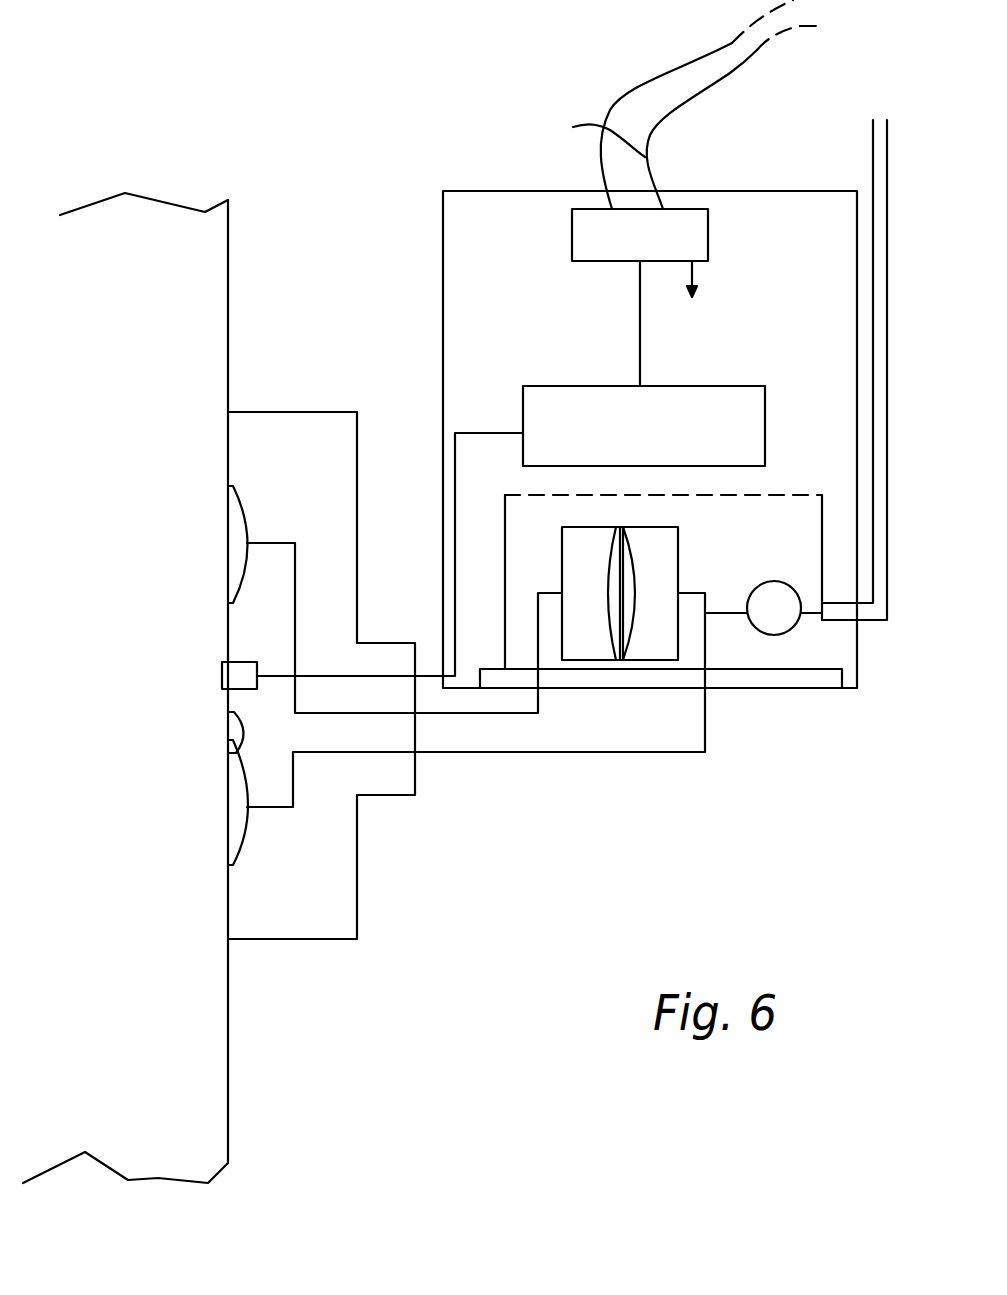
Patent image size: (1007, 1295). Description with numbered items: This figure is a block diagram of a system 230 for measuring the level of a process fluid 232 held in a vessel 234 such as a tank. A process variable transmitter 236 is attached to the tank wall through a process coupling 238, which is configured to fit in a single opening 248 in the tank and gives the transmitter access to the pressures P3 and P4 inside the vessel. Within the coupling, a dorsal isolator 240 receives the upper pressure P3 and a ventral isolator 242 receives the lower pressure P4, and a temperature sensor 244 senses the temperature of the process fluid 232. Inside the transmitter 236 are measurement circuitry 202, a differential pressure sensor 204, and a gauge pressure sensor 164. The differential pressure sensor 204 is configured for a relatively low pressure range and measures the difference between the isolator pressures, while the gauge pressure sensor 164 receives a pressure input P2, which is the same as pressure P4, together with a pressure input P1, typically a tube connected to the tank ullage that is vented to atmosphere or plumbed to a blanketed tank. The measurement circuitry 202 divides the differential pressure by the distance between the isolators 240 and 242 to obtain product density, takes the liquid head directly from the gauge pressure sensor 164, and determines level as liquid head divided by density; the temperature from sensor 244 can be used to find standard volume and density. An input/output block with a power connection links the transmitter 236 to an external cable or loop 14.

The process control loop 14 is at (608, 113).
The pressure sensor 164 is at (796, 645).
The measurement circuitry 202 is at (708, 228).
The differential pressure sensor 204 is at (590, 672).
The system 230 is at (670, 457).
The process fluid 232 is at (108, 456).
The vessel 234 is at (228, 250).
The process variable transmitter 236 is at (750, 191).
The process coupling 238 is at (284, 408).
The dorsal isolator 240 is at (243, 500).
The ventral isolator 242 is at (222, 712).
The temperature sensor 244 is at (216, 676).
The single opening 248 is at (228, 865).
The pressure input P1 is at (859, 357).
The pressure input P2 is at (730, 613).
The pressure P3 is at (218, 530).
The pressure P4 is at (218, 812).